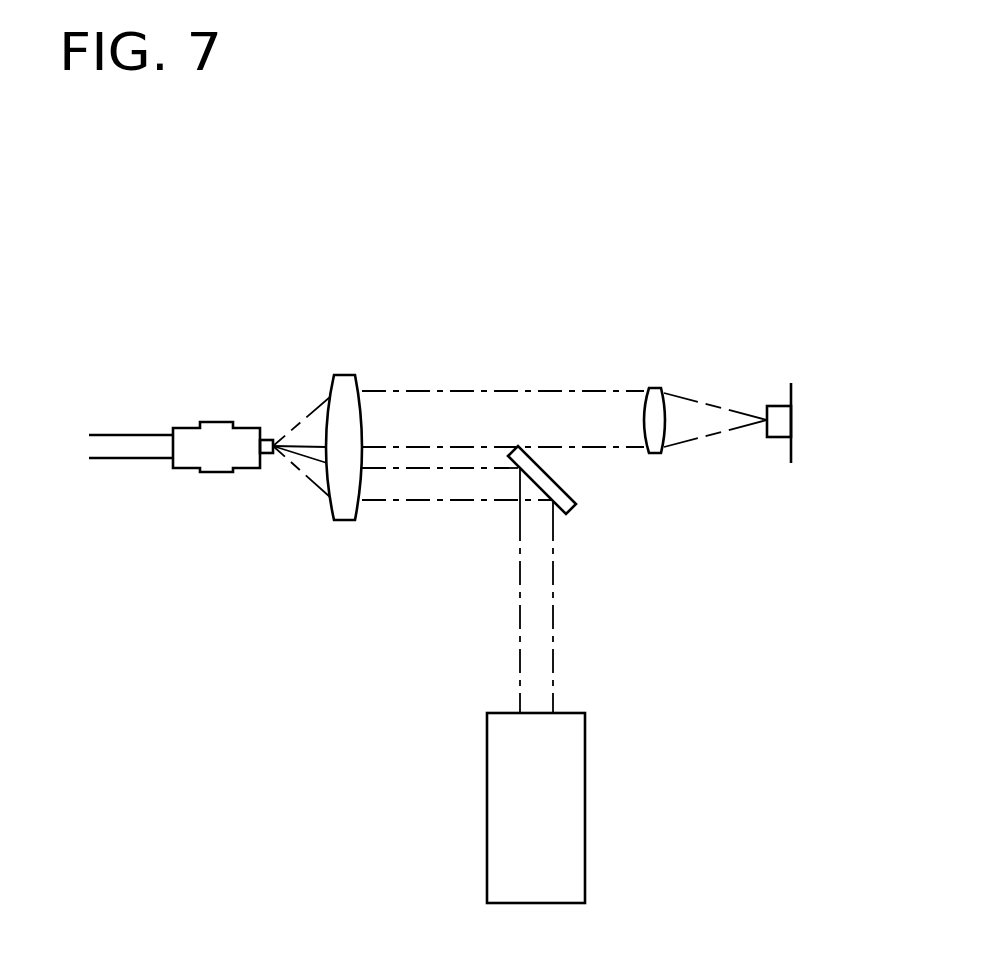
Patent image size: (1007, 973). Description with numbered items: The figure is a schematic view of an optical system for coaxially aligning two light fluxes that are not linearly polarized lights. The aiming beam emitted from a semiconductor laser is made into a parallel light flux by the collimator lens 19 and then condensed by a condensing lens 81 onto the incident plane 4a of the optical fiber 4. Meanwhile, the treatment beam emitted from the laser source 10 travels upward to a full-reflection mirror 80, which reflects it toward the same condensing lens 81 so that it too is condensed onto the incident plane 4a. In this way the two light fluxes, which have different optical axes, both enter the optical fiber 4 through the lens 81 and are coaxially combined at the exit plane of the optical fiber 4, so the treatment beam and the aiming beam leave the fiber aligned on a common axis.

The optical fiber 4 is at (133, 447).
The incident plane 4a is at (281, 437).
The condensing lens 81 is at (343, 375).
The collimator lens 19 is at (653, 388).
The full-reflection mirror 80 is at (570, 508).
The laser source 10 is at (566, 790).